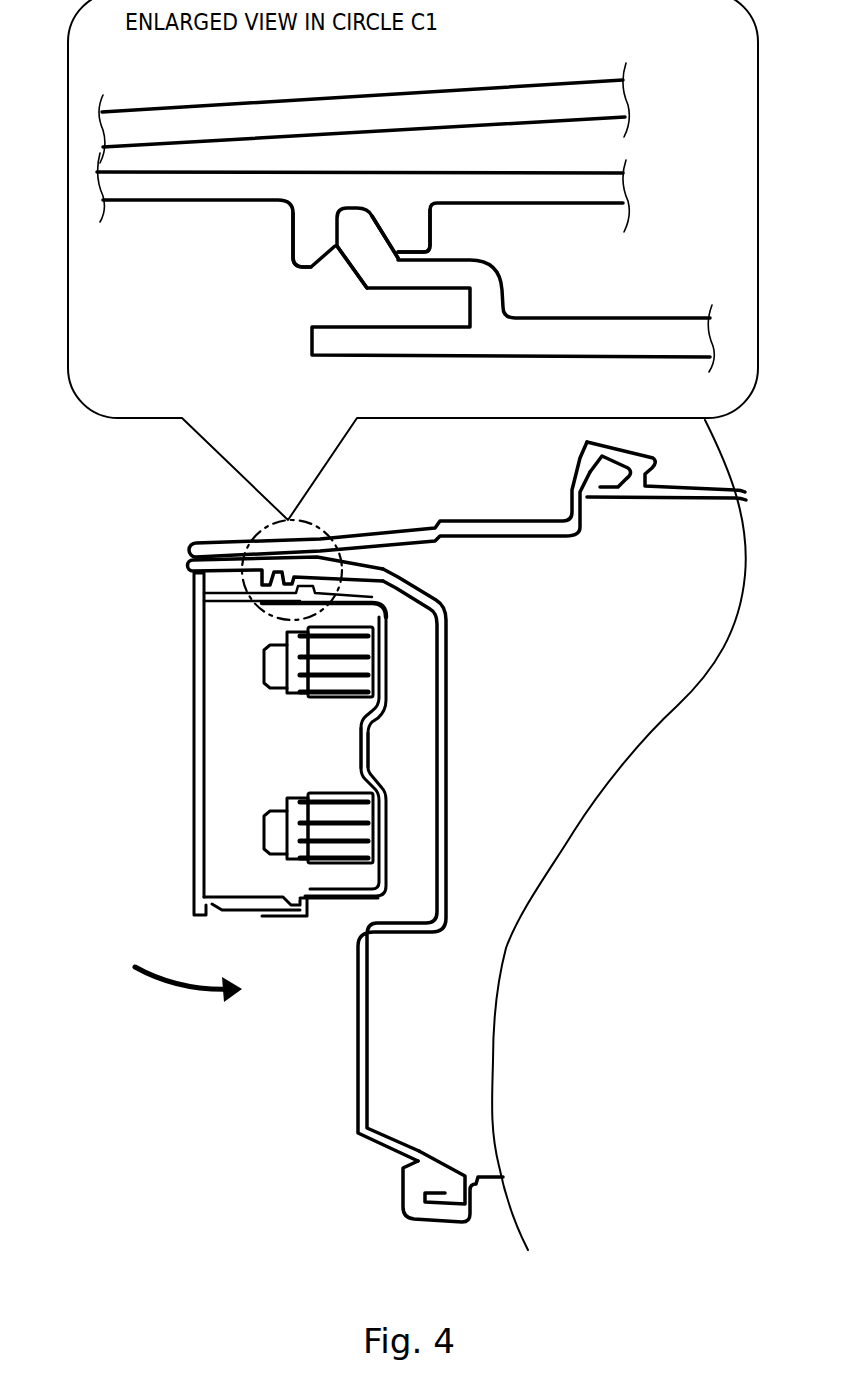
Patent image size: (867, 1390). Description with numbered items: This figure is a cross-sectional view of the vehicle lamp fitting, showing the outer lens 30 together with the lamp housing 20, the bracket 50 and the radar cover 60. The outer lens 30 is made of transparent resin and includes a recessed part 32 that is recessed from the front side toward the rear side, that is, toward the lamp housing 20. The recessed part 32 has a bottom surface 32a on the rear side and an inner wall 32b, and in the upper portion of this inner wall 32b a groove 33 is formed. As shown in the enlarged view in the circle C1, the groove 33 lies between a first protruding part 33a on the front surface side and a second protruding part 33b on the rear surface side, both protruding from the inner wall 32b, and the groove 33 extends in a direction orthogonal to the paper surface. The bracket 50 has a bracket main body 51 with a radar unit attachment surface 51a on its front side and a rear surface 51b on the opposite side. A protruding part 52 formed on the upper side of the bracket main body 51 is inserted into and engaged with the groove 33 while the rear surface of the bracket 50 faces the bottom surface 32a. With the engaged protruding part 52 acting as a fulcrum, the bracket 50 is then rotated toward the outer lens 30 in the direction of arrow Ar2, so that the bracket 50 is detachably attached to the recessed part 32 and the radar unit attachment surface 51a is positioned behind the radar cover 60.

The lamp housing 20 is at (690, 487).
The outer lens 30 is at (420, 96).
The recessed part 32 is at (363, 709).
The bottom surface 32a is at (428, 828).
The inner wall 32b is at (152, 202).
The groove 33 is at (398, 223).
The first protruding part 33a is at (295, 245).
The second protruding part 33b is at (432, 236).
The bracket 50 is at (487, 539).
The bracket main body 51 is at (387, 701).
The radar unit attachment surface 51a is at (361, 751).
The rear surface 51b is at (375, 740).
The protruding part 52 is at (347, 268).
The radar cover 60 is at (192, 723).
The circle C1 is at (320, 534).
The arrow Ar2 is at (178, 993).